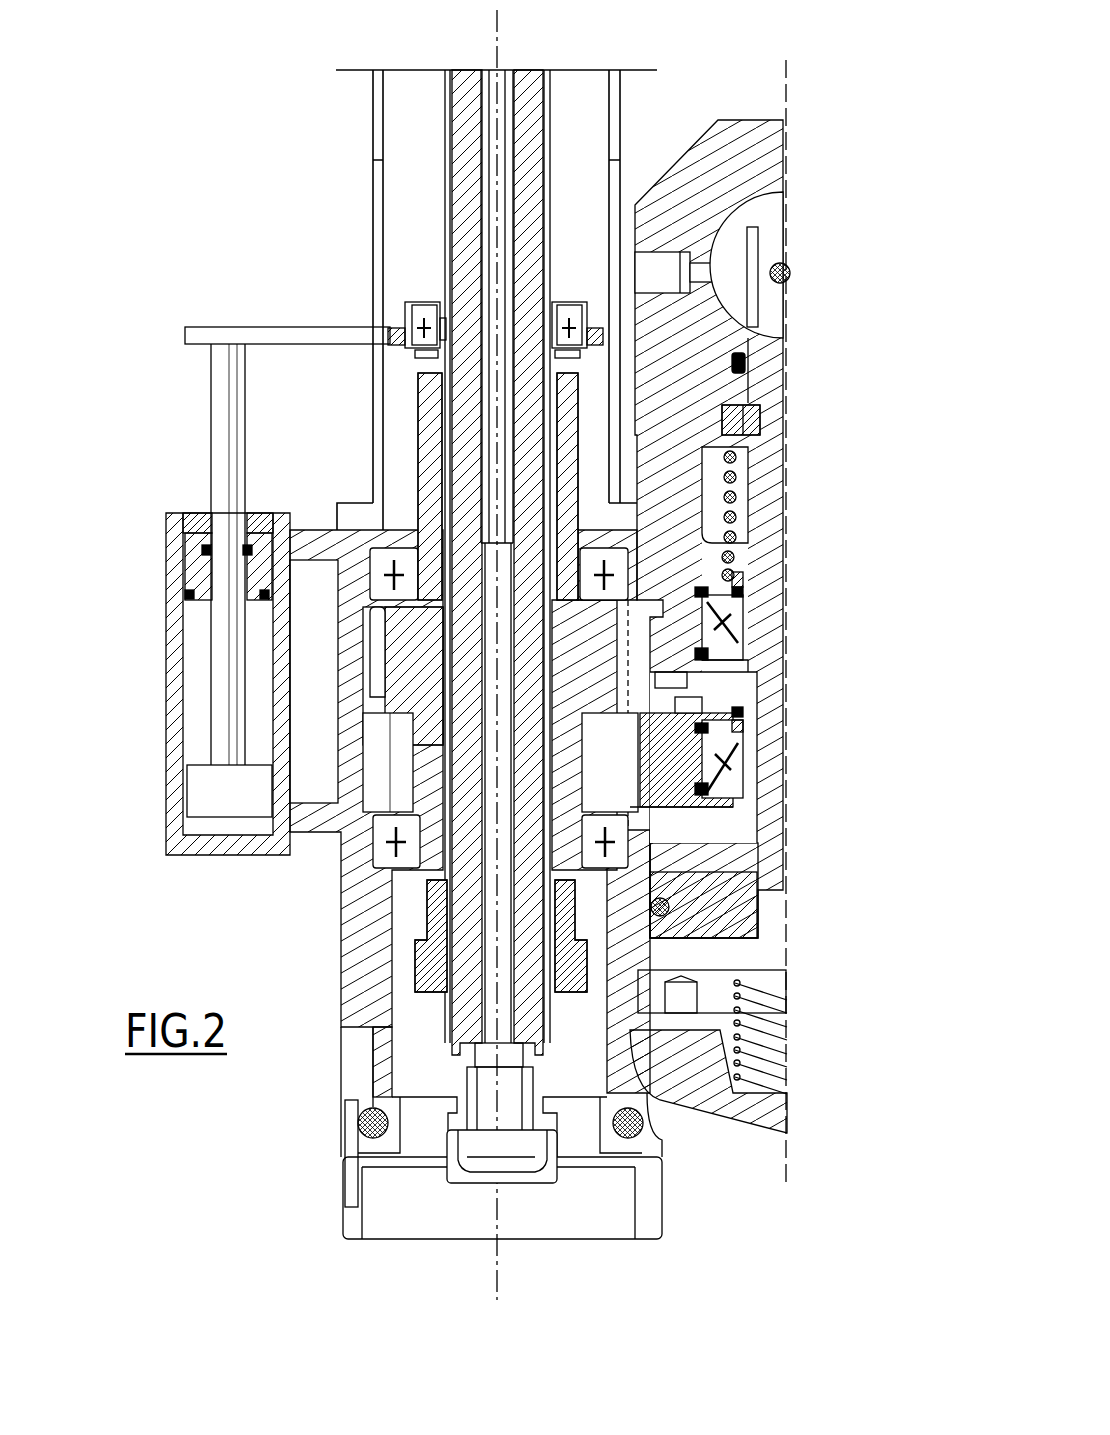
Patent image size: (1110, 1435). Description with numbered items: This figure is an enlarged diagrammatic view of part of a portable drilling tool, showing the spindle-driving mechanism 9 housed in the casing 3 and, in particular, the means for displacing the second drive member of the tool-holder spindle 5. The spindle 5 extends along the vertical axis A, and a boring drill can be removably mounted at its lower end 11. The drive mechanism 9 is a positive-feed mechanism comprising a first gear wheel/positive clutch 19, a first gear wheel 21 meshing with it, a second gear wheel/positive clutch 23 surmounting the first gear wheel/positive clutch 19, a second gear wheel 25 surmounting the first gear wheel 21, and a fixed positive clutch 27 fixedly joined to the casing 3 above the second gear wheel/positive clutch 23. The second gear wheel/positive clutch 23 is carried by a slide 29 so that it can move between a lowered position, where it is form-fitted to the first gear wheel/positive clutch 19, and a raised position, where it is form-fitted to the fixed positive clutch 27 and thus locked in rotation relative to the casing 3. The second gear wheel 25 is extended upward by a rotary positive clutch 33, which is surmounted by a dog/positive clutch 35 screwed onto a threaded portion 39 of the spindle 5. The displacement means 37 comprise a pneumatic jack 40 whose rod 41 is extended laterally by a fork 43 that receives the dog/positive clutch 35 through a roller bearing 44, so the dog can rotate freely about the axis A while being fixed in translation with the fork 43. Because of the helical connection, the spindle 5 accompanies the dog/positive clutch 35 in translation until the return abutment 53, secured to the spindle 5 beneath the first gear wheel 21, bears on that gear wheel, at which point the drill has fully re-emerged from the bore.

The casing 3 is at (626, 102).
The tool-holder spindle 5 is at (569, 155).
The spindle-driving mechanism 9 is at (792, 950).
The lower end 11 is at (455, 1172).
The first gear wheel/positive clutch 19 is at (677, 765).
The first gear wheel 21 is at (398, 778).
The second gear wheel/positive clutch 23 is at (682, 650).
The second gear wheel 25 is at (417, 675).
The fixed positive clutch 27 is at (682, 480).
The slide 29 is at (760, 624).
The rotary positive clutch 33 is at (430, 436).
The dog/positive clutch 35 is at (447, 323).
The displacement means 37 is at (133, 576).
The threaded portion 39 is at (527, 292).
The pneumatic jack 40 is at (160, 638).
The rod 41 is at (222, 407).
The fork 43 is at (258, 327).
The roller bearing 44 is at (413, 320).
The return abutment 53 is at (415, 960).
The vertical axis A is at (499, 38).